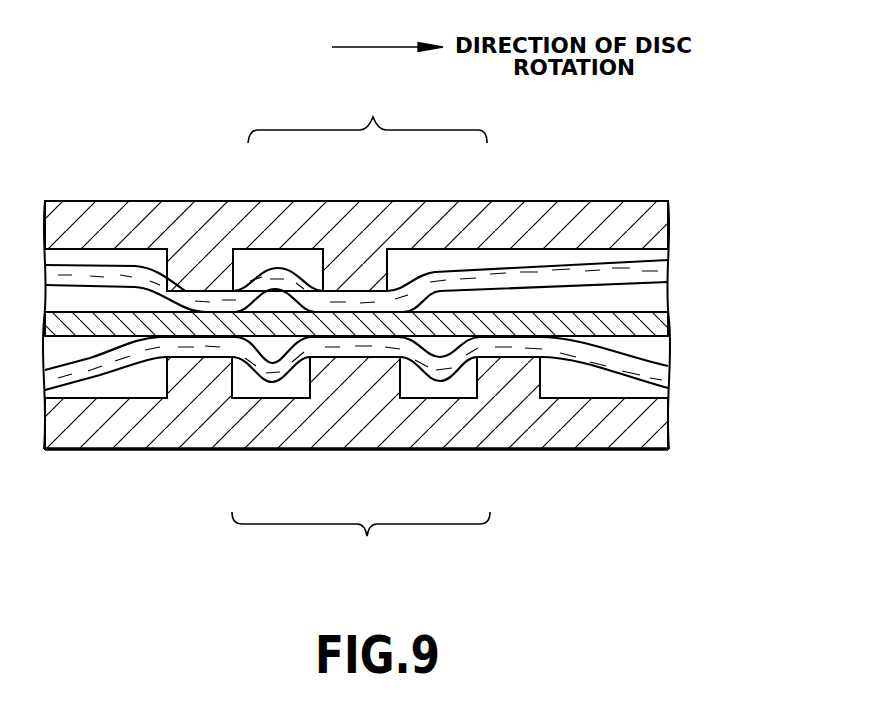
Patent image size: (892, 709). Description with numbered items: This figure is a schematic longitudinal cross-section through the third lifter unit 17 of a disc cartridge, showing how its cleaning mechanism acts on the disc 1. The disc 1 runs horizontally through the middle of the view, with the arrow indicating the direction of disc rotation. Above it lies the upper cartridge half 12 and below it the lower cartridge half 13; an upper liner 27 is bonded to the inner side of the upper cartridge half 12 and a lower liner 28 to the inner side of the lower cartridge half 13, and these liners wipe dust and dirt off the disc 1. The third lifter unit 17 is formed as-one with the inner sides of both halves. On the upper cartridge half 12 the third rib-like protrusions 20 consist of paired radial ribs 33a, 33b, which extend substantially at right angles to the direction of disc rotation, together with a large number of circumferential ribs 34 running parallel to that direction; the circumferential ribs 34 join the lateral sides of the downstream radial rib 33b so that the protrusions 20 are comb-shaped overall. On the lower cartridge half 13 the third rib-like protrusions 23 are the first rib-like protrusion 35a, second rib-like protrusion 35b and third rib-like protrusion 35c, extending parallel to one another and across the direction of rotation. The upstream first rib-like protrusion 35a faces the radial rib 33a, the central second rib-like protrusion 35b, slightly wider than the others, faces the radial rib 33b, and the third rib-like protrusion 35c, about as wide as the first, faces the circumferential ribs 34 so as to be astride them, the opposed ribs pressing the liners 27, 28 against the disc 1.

The disc 1 is at (666, 323).
The upper cartridge half 12 is at (665, 226).
The lower cartridge half 13 is at (655, 423).
The third lifter unit 17 is at (665, 158).
The third rib-like protrusions 20 is at (367, 111).
The third rib-like protrusions 23 is at (361, 541).
The upper liner 27 is at (660, 272).
The lower liner 28 is at (660, 370).
The radial rib 33a is at (236, 272).
The radial rib 33b is at (327, 271).
The circumferential ribs 34 is at (437, 258).
The first rib-like protrusion 35a is at (232, 378).
The second rib-like protrusion 35b is at (333, 378).
The third rib-like protrusion 35c is at (474, 380).